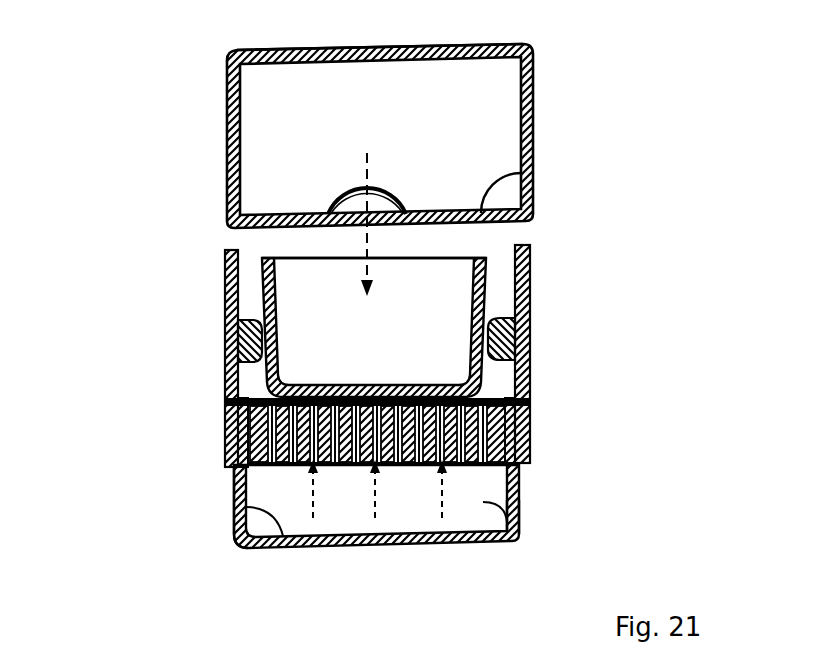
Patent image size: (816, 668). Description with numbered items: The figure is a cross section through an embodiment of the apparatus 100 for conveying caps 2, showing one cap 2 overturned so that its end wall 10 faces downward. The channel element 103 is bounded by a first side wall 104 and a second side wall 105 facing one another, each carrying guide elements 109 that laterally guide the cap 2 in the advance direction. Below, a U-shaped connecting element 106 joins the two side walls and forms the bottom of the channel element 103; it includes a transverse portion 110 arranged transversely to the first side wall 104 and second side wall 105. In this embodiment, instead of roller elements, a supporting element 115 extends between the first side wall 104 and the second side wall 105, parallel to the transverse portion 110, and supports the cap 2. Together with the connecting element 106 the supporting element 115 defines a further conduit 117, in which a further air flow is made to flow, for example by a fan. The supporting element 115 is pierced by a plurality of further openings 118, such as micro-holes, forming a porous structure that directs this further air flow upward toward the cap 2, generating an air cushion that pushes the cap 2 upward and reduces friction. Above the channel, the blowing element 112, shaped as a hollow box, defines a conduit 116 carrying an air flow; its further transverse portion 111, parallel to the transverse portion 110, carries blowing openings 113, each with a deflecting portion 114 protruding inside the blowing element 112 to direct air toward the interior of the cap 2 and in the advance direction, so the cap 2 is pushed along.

The apparatus 100 is at (662, 96).
The caps 2 is at (484, 286).
The end wall 10 is at (385, 385).
The channel element 103 is at (560, 377).
The first side wall 104 is at (226, 303).
The second side wall 105 is at (530, 380).
The connecting element 106 is at (518, 482).
The guide elements 109 is at (224, 358).
The transverse portion 110 is at (247, 507).
The further transverse portion 111 is at (530, 183).
The blowing element 112 is at (533, 117).
The blowing openings 113 is at (387, 207).
The deflecting portion 114 is at (343, 188).
The supporting element 115 is at (223, 443).
The conduit 116 is at (300, 85).
The further conduit 117 is at (517, 525).
The further openings 118 is at (486, 440).